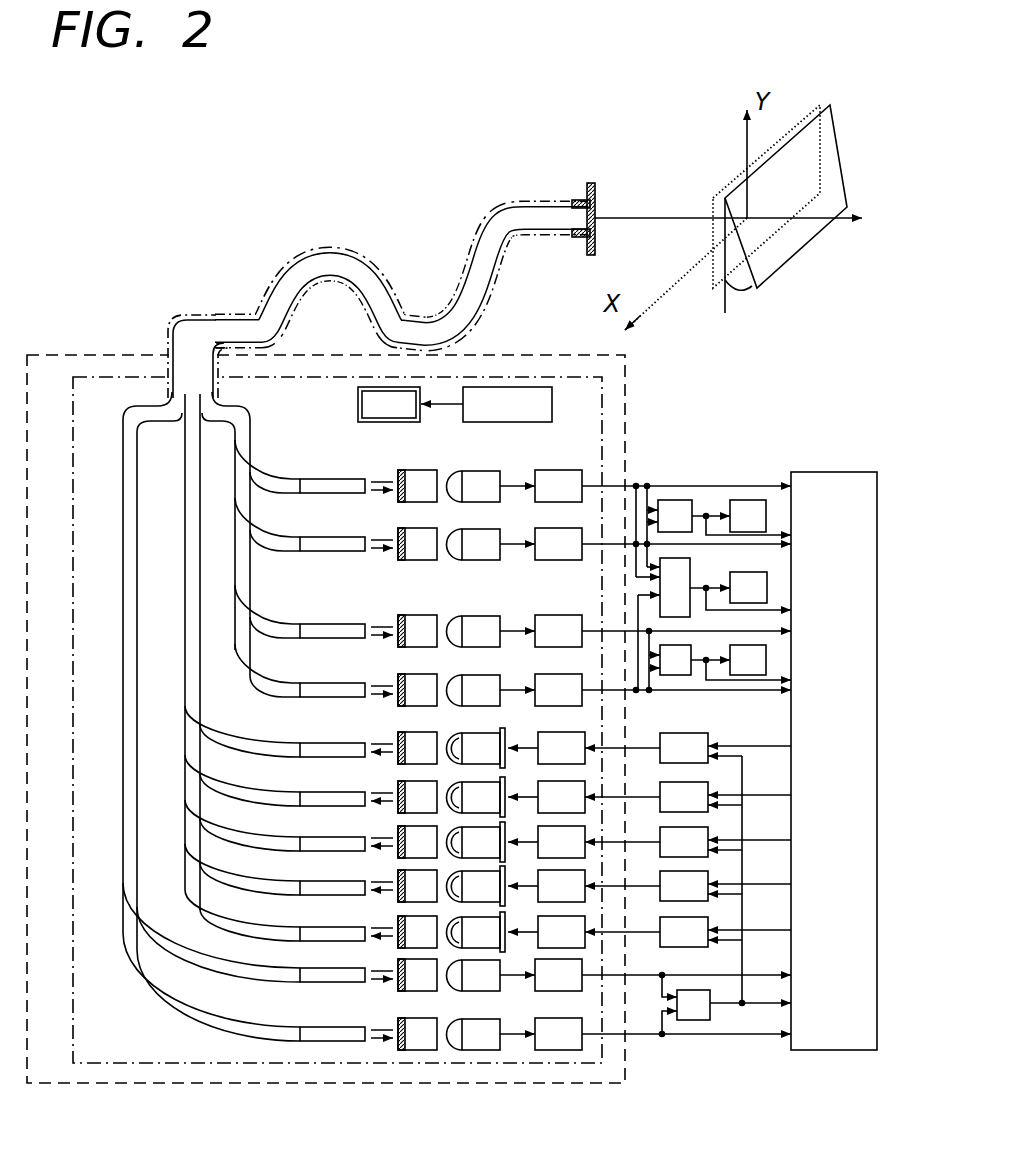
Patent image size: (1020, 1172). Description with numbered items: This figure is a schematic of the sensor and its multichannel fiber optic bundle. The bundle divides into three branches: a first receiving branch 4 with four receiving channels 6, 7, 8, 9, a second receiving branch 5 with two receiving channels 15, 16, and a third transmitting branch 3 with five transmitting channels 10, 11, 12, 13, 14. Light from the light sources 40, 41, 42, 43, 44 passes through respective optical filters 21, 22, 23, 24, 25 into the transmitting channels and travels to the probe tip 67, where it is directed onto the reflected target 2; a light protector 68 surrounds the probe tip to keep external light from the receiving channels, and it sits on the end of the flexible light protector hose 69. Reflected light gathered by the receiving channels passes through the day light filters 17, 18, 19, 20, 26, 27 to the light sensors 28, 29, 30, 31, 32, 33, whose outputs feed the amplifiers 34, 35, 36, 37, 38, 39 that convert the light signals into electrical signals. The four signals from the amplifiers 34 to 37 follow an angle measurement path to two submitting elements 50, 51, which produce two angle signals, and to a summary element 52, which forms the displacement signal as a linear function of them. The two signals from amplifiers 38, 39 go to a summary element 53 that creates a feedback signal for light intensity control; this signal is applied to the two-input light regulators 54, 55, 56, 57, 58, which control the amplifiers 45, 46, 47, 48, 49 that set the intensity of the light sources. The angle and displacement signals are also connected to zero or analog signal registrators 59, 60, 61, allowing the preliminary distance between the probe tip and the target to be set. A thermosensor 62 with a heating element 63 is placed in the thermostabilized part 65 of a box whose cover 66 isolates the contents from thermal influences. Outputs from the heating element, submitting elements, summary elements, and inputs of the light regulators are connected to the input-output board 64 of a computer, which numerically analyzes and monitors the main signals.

The reflected target 2 is at (836, 192).
The third branch 3 is at (193, 480).
The first receiving branch 4 is at (242, 436).
The second receiving branch 5 is at (130, 433).
The receiving channel 6 is at (366, 479).
The receiving channel 7 is at (366, 537).
The receiving channel 8 is at (366, 624).
The receiving channel 9 is at (366, 683).
The transmitting channel 10 is at (366, 743).
The transmitting channel 11 is at (366, 792).
The transmitting channel 12 is at (366, 837).
The transmitting channel 13 is at (366, 881).
The transmitting channel 14 is at (366, 927).
The receiving channel 15 is at (366, 968).
The receiving channel 16 is at (366, 1027).
The optical filter 17 is at (418, 486).
The optical filter 18 is at (418, 544).
The optical filter 19 is at (418, 631).
The optical filter 20 is at (418, 690).
The optical filter 21 is at (418, 748).
The optical filter 22 is at (418, 797).
The optical filter 23 is at (418, 842).
The optical filter 24 is at (418, 886).
The optical filter 25 is at (418, 932).
The optical filter 26 is at (418, 975).
The optical filter 27 is at (418, 1034).
The light sensor 28 is at (473, 486).
The light sensor 29 is at (473, 544).
The light sensor 30 is at (473, 631).
The light sensor 31 is at (473, 690).
The light sensor 32 is at (473, 975).
The light sensor 33 is at (473, 1034).
The amplifier 34 is at (558, 486).
The amplifier 35 is at (558, 544).
The amplifier 36 is at (558, 631).
The amplifier 37 is at (558, 690).
The amplifier 38 is at (558, 975).
The amplifier 39 is at (558, 1034).
The light source 40 is at (475, 748).
The light source 41 is at (475, 797).
The light source 42 is at (475, 842).
The light source 43 is at (475, 886).
The light source 44 is at (475, 932).
The amplifier 45 is at (561, 748).
The amplifier 46 is at (561, 797).
The amplifier 47 is at (561, 842).
The amplifier 48 is at (561, 886).
The amplifier 49 is at (561, 932).
The submitting element 50 is at (675, 516).
The submitting element 51 is at (675, 660).
The summary element 52 is at (675, 587).
The summary element 53 is at (693, 1005).
The light regulator 54 is at (684, 748).
The light regulator 55 is at (684, 797).
The light regulator 56 is at (684, 842).
The light regulator 57 is at (684, 886).
The light regulator 58 is at (684, 932).
The analog signal registrator 59 is at (748, 516).
The analog signal registrator 60 is at (748, 587).
The analog signal registrator 61 is at (748, 660).
The thermosensor 62 is at (389, 404).
The heating element 63 is at (507, 404).
The input-output board 64 is at (834, 761).
The thermostabilized part 65 is at (337, 720).
The cover 66 is at (37, 355).
The probe tip 67 is at (596, 218).
The light protector 68 is at (588, 196).
The flexible light protector hose 69 is at (493, 222).